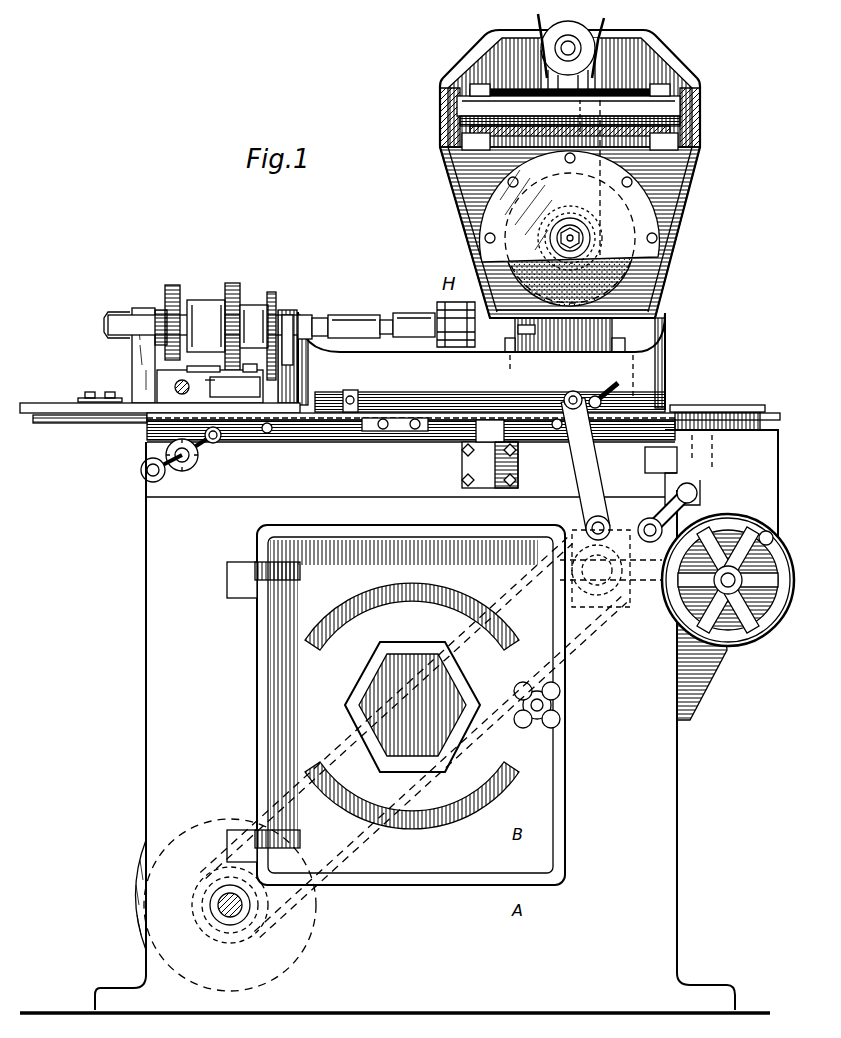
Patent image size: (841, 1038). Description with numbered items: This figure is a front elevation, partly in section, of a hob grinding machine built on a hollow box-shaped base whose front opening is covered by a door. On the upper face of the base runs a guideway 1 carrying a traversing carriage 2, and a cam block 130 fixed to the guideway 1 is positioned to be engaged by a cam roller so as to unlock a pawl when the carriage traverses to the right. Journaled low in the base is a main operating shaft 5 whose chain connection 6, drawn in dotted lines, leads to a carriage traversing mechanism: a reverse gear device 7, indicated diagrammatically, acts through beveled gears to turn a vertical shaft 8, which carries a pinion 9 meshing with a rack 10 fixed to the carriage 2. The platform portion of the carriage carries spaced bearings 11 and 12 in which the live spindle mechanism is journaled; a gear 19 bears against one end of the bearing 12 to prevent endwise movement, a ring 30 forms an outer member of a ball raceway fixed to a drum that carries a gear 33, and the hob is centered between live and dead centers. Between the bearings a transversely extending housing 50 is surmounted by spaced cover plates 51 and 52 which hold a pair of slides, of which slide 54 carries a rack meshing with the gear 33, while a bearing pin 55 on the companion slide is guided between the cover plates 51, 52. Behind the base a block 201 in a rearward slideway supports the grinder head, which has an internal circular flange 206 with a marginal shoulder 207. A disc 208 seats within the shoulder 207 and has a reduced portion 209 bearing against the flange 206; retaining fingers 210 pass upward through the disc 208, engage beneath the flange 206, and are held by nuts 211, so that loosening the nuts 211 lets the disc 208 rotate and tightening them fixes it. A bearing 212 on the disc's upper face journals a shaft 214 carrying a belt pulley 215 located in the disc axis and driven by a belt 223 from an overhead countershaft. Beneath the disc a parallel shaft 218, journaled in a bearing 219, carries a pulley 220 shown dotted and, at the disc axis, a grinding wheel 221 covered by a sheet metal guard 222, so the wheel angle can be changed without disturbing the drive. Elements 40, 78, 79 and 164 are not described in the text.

The guideway 1 is at (300, 430).
The traversing carriage 2 is at (655, 362).
The main operating shaft 5 is at (222, 915).
The chain connection 6 is at (347, 836).
The reverse gear device 7 is at (615, 608).
The vertical shaft 8 is at (700, 455).
The pinion 9 is at (716, 410).
The rack 10 is at (765, 412).
The bearing 11 is at (140, 360).
The bearing 12 is at (290, 325).
The gear 19 is at (273, 292).
The ring 30 is at (163, 310).
The gear 33 is at (234, 283).
The gear 40 is at (176, 288).
The housing 50 is at (210, 386).
The cover plate 51 is at (203, 362).
The cover plate 52 is at (251, 361).
The slide 54 is at (202, 389).
The bearing pin 55 is at (235, 387).
The dial 78 is at (200, 456).
The knob 79 is at (166, 473).
The cam block 130 is at (410, 432).
The bracket 164 is at (512, 460).
The block 201 is at (535, 330).
The internal circular flange 206 is at (690, 122).
The marginal shoulder 207 is at (445, 100).
The disc 208 is at (505, 100).
The portion of reduced diameter 209 is at (470, 122).
The retaining fingers 210 is at (458, 150).
The nuts 211 is at (478, 92).
The bearing 212 is at (608, 92).
The shaft 214 is at (570, 42).
The belt pulley 215 is at (548, 22).
The shaft 218 is at (582, 236).
The bearing 219 is at (612, 140).
The pulley 220 is at (600, 248).
The grinding wheel 221 is at (648, 290).
The sheet metal guard 222 is at (492, 228).
The belt 223 is at (605, 28).